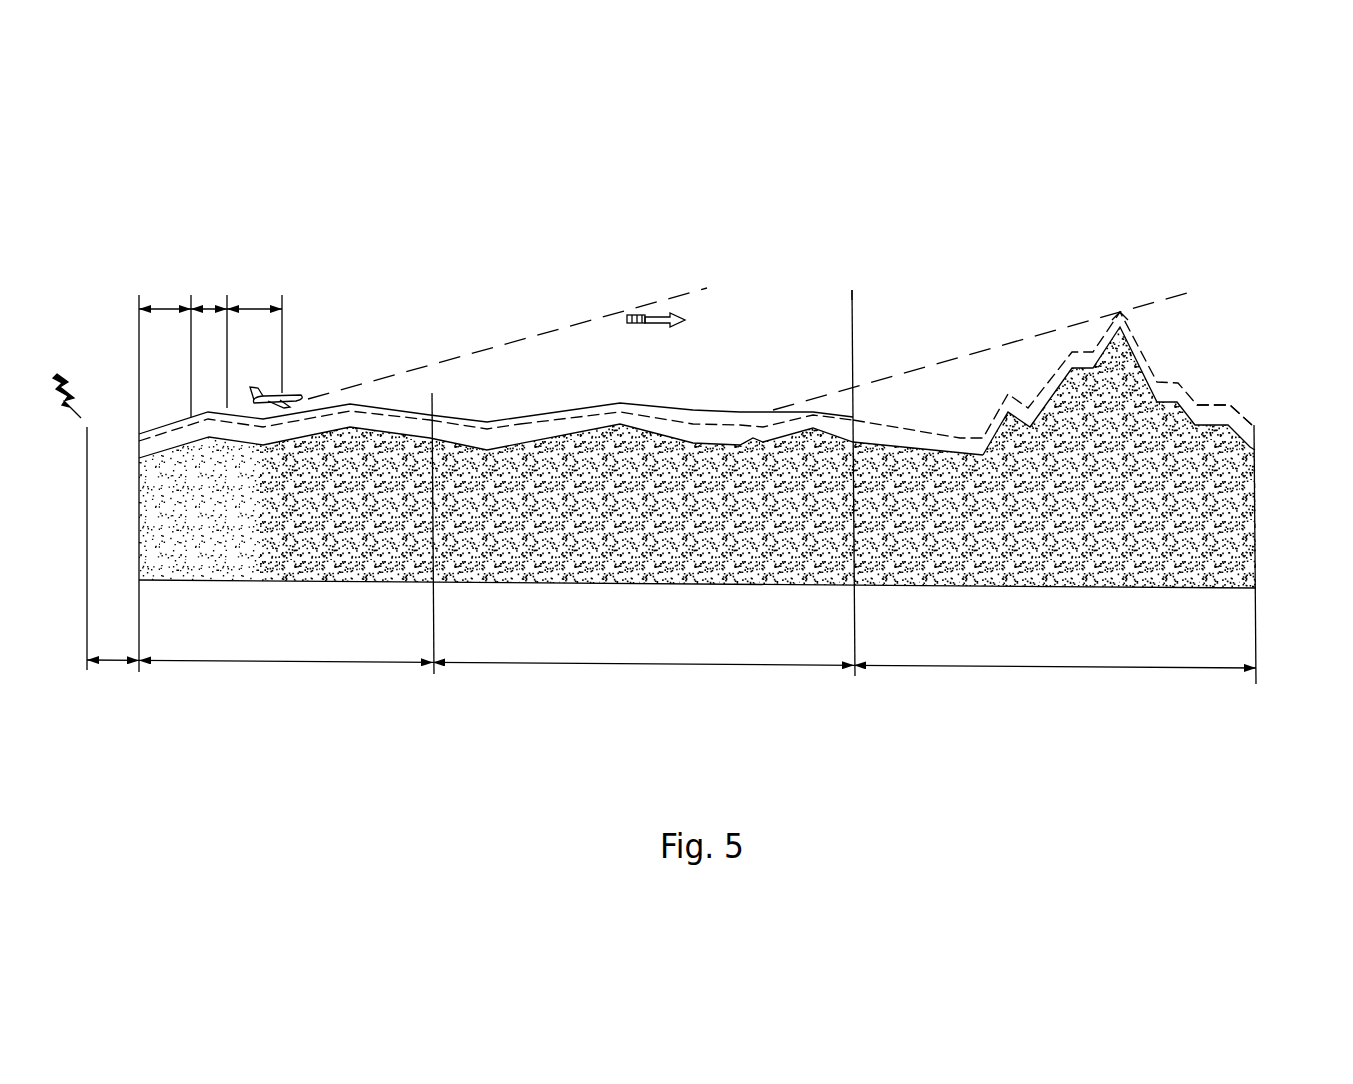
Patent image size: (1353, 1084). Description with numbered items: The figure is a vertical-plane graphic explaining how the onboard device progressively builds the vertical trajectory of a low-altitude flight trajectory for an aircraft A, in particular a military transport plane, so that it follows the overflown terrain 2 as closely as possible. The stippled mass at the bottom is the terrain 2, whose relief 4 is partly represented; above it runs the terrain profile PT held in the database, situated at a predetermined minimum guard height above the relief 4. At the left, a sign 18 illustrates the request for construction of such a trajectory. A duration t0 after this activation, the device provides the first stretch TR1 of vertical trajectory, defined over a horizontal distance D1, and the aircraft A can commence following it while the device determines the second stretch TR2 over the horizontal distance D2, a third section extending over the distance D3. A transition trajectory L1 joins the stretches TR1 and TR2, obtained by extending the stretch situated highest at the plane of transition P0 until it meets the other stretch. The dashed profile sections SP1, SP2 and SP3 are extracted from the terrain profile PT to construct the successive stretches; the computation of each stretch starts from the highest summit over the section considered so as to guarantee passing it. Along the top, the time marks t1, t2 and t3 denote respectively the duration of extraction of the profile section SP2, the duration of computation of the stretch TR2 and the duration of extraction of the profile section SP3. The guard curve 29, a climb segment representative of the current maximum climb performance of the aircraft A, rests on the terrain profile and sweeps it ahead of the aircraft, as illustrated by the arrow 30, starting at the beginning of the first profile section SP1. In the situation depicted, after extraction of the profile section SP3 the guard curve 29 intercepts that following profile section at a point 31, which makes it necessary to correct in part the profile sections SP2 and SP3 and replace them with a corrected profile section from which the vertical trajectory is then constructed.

The terrain 2 is at (1242, 548).
The relief 4 is at (1186, 403).
The sign 18 is at (63, 370).
The guard curve 29 is at (566, 325).
The arrow 30 is at (655, 327).
The point 31 is at (1121, 308).
The aircraft A is at (292, 395).
The first profile section SP1 is at (378, 412).
The second profile section SP2 is at (698, 415).
The third profile section SP3 is at (940, 425).
The first stretch TR1 is at (420, 404).
The second stretch TR2 is at (545, 413).
The transition trajectory L1 is at (450, 412).
The plane of transition P0 is at (856, 293).
The terrain profile PT is at (1234, 412).
The duration t0 is at (113, 643).
The duration t1 is at (165, 347).
The duration t2 is at (209, 342).
The duration t3 is at (254, 335).
The horizontal distance D1 is at (286, 645).
The horizontal distance D2 is at (643, 646).
The horizontal distance D3 is at (1055, 649).